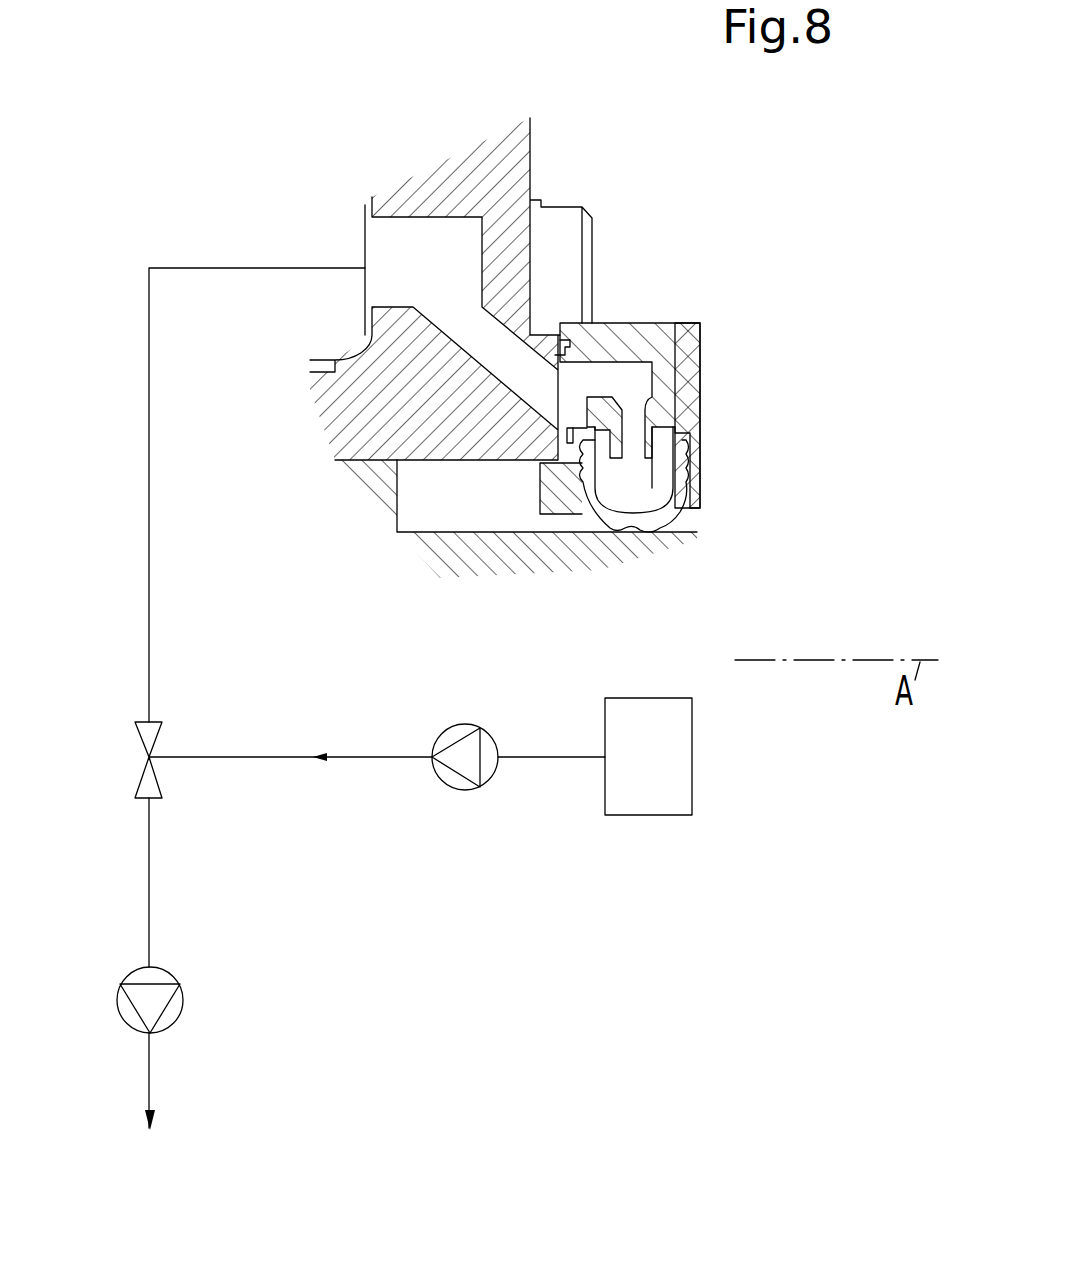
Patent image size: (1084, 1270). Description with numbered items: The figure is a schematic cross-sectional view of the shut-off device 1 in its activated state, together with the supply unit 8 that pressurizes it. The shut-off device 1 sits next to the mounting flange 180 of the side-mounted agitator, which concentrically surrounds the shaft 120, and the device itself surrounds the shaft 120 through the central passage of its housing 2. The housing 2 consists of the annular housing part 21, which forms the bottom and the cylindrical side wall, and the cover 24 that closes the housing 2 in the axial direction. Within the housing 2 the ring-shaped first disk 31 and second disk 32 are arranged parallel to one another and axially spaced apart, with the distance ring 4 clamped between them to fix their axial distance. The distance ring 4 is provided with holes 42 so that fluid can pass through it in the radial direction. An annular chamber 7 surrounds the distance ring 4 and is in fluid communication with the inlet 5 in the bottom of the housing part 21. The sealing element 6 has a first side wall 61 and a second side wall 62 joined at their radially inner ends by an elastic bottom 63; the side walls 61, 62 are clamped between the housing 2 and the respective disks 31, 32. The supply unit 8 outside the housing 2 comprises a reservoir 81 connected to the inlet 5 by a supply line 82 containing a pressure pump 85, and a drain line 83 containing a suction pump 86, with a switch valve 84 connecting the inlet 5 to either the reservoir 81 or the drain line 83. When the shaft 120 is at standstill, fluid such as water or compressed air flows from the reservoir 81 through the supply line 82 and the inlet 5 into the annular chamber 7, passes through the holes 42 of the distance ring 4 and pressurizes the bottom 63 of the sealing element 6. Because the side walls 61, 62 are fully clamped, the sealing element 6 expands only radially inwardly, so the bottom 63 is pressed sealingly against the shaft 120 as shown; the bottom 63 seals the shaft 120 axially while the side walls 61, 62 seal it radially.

The shut-off device 1 is at (645, 280).
The housing 2 is at (682, 367).
The distance ring 4 is at (660, 425).
The inlet 5 is at (567, 392).
The sealing element 6 is at (643, 546).
The annular chamber 7 is at (633, 383).
The supply unit 8 is at (363, 849).
The housing part 21 is at (548, 482).
The cover 24 is at (700, 363).
The first disk 31 is at (660, 448).
The second disk 32 is at (602, 472).
The holes 42 is at (627, 422).
The first side wall 61 is at (682, 472).
The second side wall 62 is at (582, 480).
The elastic bottom 63 is at (658, 512).
The reservoir 81 is at (662, 797).
The supply line 82 is at (268, 755).
The drain line 83 is at (150, 897).
The switch valve 84 is at (142, 740).
The pressure pump 85 is at (467, 792).
The suction pump 86 is at (185, 1006).
The shaft 120 is at (432, 540).
The mounting flange 180 is at (452, 165).